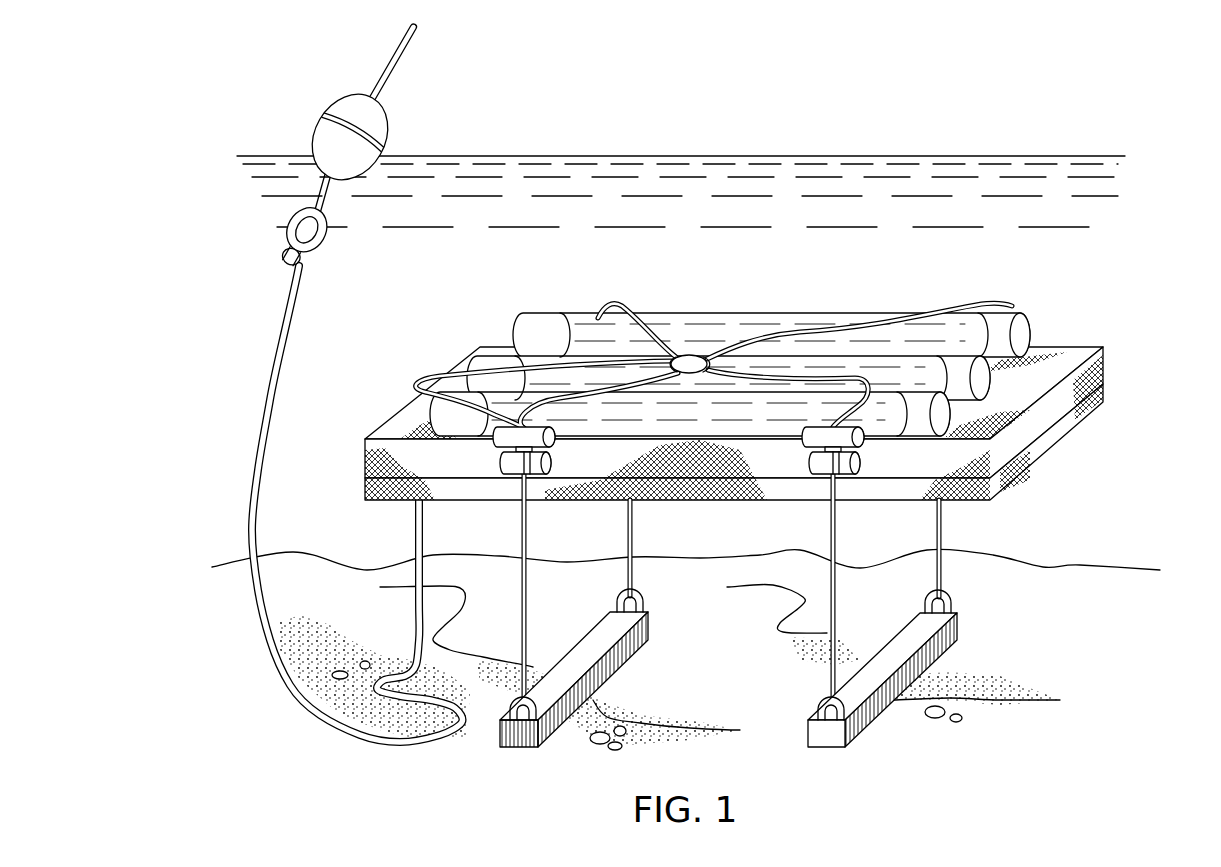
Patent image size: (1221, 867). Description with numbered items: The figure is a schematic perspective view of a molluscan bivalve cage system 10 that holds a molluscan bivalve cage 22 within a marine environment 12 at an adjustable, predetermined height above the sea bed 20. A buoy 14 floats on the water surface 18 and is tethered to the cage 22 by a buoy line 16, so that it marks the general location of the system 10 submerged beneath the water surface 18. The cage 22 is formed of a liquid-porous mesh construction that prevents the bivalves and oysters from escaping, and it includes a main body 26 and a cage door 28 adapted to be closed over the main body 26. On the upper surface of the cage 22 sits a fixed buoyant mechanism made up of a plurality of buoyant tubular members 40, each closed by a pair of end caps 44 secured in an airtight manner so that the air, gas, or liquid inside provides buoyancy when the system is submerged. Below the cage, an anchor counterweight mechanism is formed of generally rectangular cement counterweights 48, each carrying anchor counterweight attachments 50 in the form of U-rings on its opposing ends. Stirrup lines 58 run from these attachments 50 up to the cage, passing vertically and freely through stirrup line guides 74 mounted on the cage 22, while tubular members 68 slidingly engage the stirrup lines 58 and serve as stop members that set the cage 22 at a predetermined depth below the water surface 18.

The molluscan bivalve cage system 10 is at (770, 514).
The marine environment 12 is at (776, 397).
The buoy 14 is at (387, 120).
The buoy line 16 is at (263, 470).
The water surface 18 is at (688, 152).
The sea bed 20 is at (697, 720).
The molluscan bivalve cage 22 is at (458, 357).
The main body 26 is at (1050, 438).
The cage door 28 is at (1105, 360).
The buoyant tubular members 40 is at (962, 312).
The end caps 44 is at (550, 312).
The counterweight 48 is at (630, 650).
The anchor counterweight attachments 50 is at (640, 598).
The stirrup lines 58 is at (652, 322).
The tubular members 68 is at (445, 408).
The stirrup line guides 74 is at (553, 462).